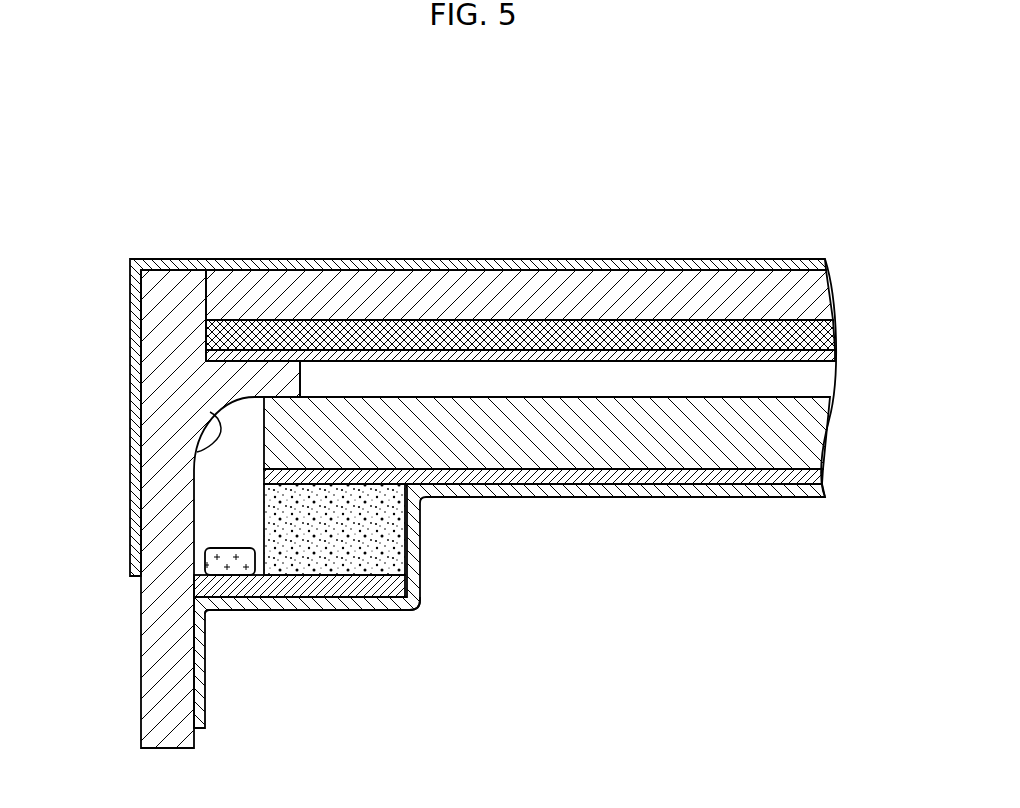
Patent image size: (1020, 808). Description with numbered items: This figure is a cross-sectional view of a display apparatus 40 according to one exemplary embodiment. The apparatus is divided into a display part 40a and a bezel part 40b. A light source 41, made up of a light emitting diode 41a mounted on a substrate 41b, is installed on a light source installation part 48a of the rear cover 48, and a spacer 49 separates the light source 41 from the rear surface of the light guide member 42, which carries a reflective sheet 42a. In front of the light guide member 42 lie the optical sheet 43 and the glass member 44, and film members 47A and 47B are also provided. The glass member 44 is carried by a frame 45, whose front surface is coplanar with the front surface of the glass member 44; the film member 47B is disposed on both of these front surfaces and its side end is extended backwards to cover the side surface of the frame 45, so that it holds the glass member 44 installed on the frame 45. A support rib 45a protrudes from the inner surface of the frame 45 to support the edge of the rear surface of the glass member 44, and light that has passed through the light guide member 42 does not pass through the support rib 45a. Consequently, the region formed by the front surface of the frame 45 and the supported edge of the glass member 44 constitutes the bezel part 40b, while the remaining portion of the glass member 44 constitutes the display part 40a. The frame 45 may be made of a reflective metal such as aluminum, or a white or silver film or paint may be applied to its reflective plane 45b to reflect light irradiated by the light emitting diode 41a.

The display apparatus 40 is at (483, 113).
The display part 40a is at (310, 217).
The bezel part 40b is at (142, 217).
The light source 41 is at (217, 602).
The light emitting diode 41a is at (213, 565).
The substrate 41b is at (205, 590).
The light guide member 42 is at (803, 437).
The reflective sheet 42a is at (805, 480).
The optical sheet 43 is at (807, 337).
The glass member 44 is at (807, 295).
The frame 45 is at (208, 509).
The support rib 45a is at (298, 382).
The reflective plane 45b is at (197, 452).
The film member 47A is at (820, 357).
The film member 47B is at (548, 266).
The rear cover 48 is at (509, 606).
The light source installation part 48a is at (358, 606).
The spacer 49 is at (280, 518).